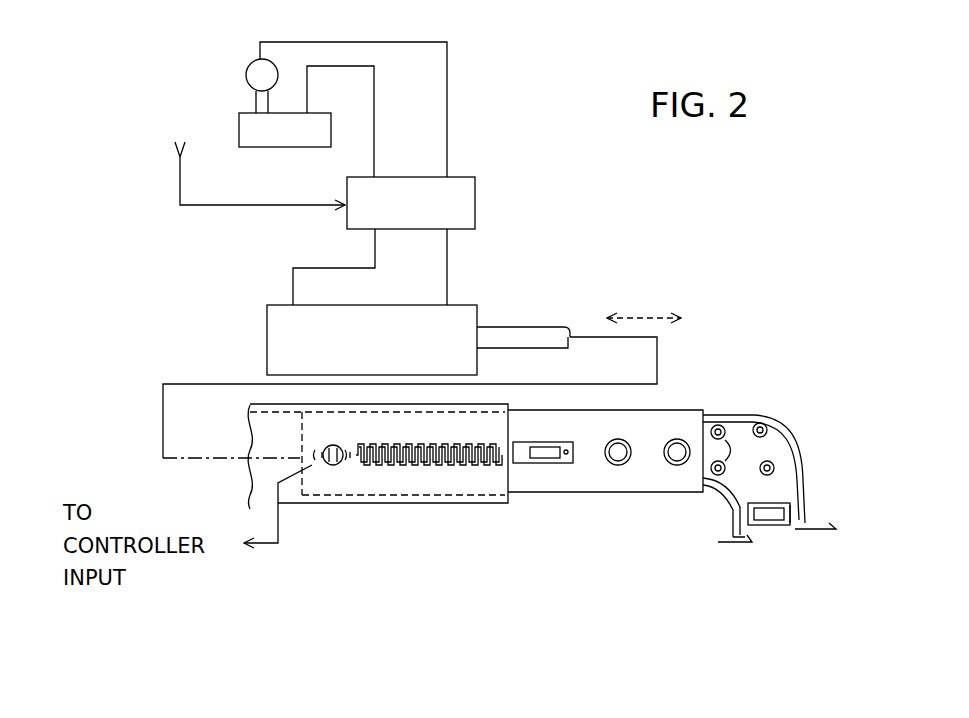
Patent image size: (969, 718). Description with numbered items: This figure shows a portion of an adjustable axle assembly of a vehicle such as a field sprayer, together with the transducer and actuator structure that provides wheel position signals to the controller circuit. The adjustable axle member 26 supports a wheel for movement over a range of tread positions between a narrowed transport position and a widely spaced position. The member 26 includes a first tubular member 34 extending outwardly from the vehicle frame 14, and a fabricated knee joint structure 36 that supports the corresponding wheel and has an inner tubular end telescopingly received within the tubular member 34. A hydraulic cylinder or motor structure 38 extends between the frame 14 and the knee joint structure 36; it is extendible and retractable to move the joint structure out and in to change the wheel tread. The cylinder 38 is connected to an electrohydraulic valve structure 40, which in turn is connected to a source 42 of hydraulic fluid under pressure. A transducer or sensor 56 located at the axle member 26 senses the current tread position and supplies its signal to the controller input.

The frame 14 is at (602, 287).
The adjustable axle member 26 is at (527, 284).
The first tubular member 34 is at (480, 503).
The fabricated knee joint structure 36 is at (550, 492).
The hydraulic cylinder or motor structure 38 is at (236, 340).
The electrohydraulic valve structure 40 is at (478, 199).
The source of hydraulic fluid under pressure 42 is at (185, 99).
The transducer or sensor 56 is at (342, 467).